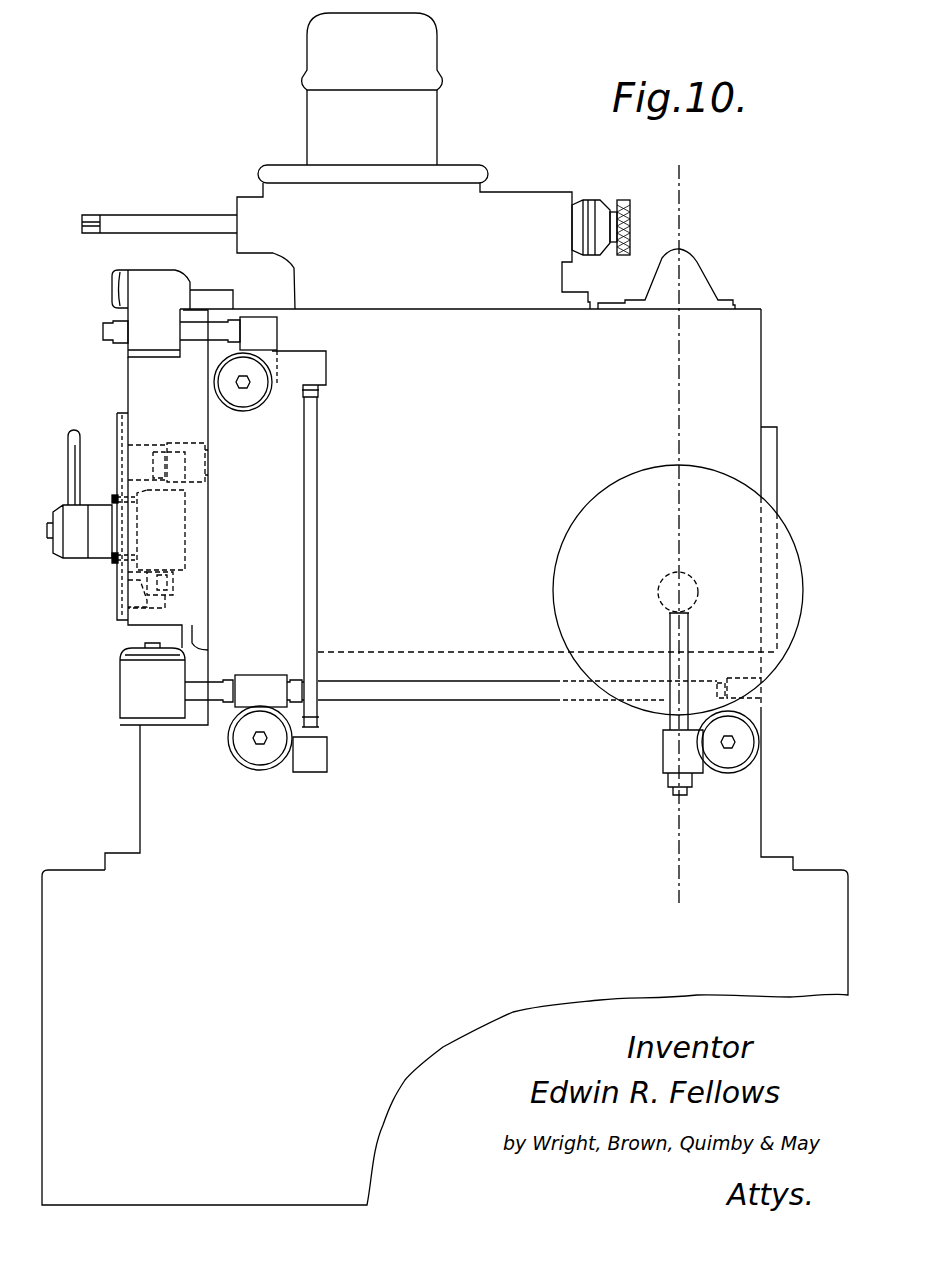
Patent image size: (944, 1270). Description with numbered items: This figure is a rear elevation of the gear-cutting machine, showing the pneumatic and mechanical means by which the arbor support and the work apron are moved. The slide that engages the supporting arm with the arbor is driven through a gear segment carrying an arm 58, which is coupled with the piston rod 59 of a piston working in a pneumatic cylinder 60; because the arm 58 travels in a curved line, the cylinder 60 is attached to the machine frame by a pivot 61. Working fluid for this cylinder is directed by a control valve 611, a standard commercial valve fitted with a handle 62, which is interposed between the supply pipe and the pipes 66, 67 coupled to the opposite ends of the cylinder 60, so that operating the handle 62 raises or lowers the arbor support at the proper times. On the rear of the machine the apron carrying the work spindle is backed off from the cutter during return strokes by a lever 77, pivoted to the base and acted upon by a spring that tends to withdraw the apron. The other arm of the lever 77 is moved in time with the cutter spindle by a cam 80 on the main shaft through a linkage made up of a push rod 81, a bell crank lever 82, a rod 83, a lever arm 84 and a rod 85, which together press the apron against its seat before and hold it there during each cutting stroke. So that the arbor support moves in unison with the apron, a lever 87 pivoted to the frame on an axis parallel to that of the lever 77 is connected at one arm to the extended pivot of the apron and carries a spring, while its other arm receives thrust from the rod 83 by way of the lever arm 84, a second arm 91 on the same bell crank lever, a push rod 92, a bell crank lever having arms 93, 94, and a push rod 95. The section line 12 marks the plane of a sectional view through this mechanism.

The section line 12 is at (658, 903).
The arm 58 is at (172, 448).
The piston rod 59 is at (152, 462).
The pneumatic cylinder 60 is at (182, 545).
The pivot 61 is at (173, 583).
The handle 62 is at (73, 433).
The control valve 611 is at (95, 515).
The pipe 66 is at (135, 505).
The pipe 67 is at (122, 572).
The lever 77 is at (130, 678).
The cam 80 is at (662, 585).
The push rod 81 is at (672, 625).
The bell crank lever 82 is at (670, 748).
The rod 83 is at (453, 693).
The lever arm 84 is at (253, 685).
The rod 85 is at (205, 692).
The lever 87 is at (142, 327).
The second arm 91 is at (318, 750).
The push rod 92 is at (312, 492).
The bell crank lever arm 93 is at (316, 361).
The bell crank lever arm 94 is at (267, 329).
The push rod 95 is at (205, 333).